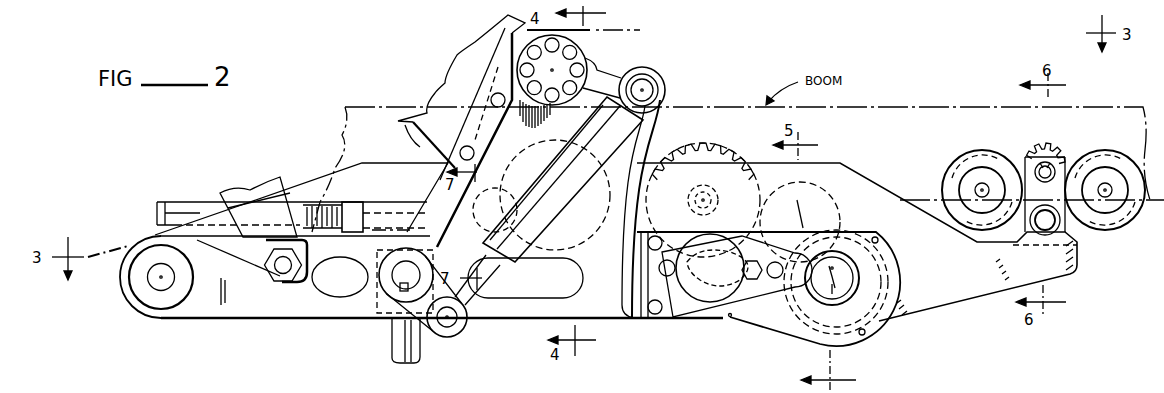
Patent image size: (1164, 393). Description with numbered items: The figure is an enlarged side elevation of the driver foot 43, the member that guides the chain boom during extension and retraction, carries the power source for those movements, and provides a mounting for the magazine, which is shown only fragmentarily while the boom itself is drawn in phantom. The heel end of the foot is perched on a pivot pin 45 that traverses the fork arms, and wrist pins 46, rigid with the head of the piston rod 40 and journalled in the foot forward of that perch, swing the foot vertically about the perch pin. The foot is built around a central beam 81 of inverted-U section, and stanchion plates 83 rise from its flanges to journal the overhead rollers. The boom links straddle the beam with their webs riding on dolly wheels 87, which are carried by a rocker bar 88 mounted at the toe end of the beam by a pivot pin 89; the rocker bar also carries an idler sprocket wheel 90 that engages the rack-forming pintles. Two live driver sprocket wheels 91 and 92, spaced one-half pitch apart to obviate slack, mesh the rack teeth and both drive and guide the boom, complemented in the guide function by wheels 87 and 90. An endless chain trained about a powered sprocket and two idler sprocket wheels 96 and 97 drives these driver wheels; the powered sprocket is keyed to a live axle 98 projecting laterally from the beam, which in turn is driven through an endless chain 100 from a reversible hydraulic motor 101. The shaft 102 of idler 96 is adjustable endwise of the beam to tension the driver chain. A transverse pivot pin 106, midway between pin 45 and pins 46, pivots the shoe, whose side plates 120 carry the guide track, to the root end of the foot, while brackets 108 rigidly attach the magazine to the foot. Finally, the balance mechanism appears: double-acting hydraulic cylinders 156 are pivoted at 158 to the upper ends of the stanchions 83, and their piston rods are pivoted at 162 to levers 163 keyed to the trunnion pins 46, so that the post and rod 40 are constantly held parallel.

The piston rod 40 is at (392, 340).
The driver foot 43 is at (223, 319).
The pivot pin 45 is at (158, 278).
The wrist pins 46 is at (398, 284).
The central beam 81 is at (378, 178).
The stanchion plates 83 is at (618, 72).
The dolly wheels 87 is at (968, 153).
The rocker bar 88 is at (1076, 227).
The pivot pin 89 is at (1042, 236).
The idler sprocket wheel 90 is at (1052, 141).
The driver sprocket wheel 91 is at (558, 138).
The driver sprocket wheel 92 is at (709, 148).
The idler sprocket wheel 96 is at (497, 186).
The idler sprocket wheel 97 is at (838, 188).
The live axle 98 is at (860, 281).
The endless chain 100 is at (780, 316).
The reversible hydraulic motor 101 is at (721, 289).
The shaft 102 is at (471, 149).
The pivot pin 106 is at (278, 276).
The brackets 108 is at (460, 100).
The side plates 120 is at (258, 186).
The double-acting hydraulic cylinders 156 is at (613, 140).
The pivot 158 is at (656, 80).
The pivot 162 is at (455, 331).
The levers 163 is at (378, 259).